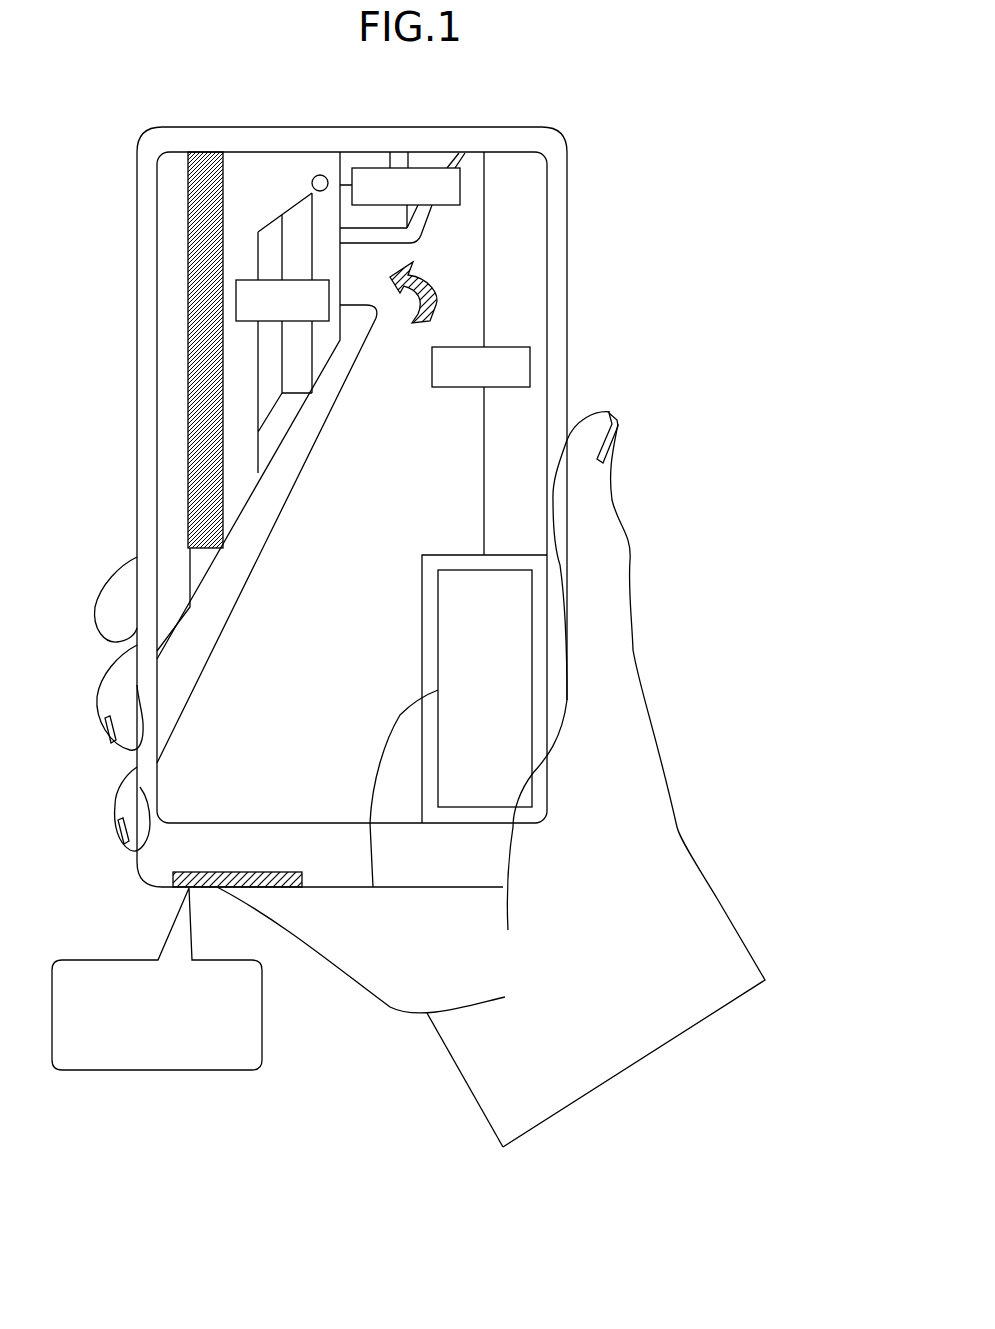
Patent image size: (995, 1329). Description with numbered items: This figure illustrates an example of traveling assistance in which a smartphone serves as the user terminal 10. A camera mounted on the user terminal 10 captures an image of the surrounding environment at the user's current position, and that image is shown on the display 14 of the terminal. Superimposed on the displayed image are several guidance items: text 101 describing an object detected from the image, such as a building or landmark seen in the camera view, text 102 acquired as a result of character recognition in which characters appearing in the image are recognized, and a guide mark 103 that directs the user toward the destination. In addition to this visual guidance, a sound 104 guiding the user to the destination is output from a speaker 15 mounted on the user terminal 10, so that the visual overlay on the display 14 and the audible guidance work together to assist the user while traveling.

The user terminal 10 is at (484, 127).
The display 14 is at (157, 329).
The speaker 15 is at (283, 887).
The text 101 is at (249, 279).
The text 102 is at (373, 887).
The guide mark 103 is at (436, 286).
The sound 104 is at (158, 1070).